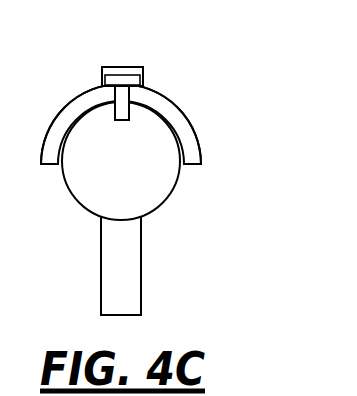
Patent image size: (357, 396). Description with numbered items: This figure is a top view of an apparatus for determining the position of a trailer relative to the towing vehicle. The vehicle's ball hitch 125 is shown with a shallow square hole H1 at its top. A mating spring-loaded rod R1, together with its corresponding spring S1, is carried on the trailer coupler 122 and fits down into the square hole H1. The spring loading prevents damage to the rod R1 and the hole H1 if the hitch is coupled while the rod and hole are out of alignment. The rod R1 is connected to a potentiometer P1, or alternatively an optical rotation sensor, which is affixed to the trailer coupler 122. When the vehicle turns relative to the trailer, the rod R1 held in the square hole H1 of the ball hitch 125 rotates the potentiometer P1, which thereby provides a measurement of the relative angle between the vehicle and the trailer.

The trailer coupler 122 is at (211, 137).
The ball hitch 125 is at (173, 217).
The potentiometer P1 is at (157, 81).
The spring-loaded rod R1 is at (123, 95).
The square hole H1 is at (121, 121).
The spring S1 is at (121, 67).